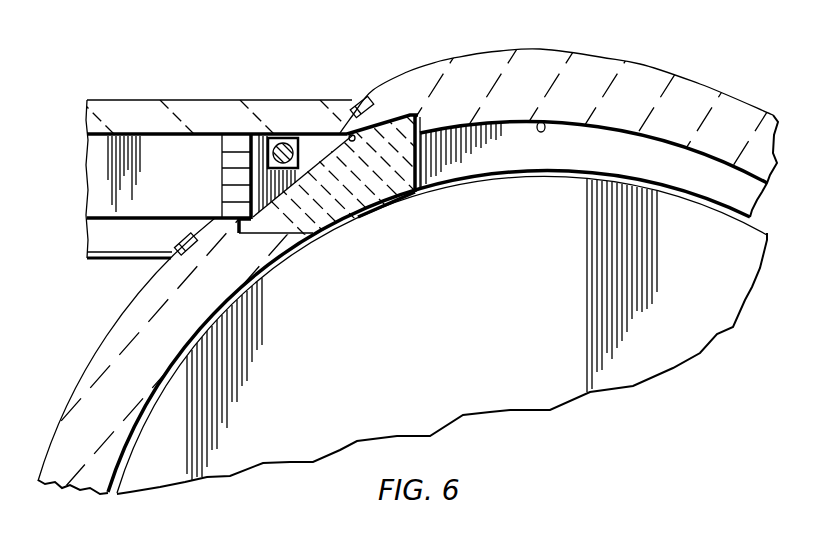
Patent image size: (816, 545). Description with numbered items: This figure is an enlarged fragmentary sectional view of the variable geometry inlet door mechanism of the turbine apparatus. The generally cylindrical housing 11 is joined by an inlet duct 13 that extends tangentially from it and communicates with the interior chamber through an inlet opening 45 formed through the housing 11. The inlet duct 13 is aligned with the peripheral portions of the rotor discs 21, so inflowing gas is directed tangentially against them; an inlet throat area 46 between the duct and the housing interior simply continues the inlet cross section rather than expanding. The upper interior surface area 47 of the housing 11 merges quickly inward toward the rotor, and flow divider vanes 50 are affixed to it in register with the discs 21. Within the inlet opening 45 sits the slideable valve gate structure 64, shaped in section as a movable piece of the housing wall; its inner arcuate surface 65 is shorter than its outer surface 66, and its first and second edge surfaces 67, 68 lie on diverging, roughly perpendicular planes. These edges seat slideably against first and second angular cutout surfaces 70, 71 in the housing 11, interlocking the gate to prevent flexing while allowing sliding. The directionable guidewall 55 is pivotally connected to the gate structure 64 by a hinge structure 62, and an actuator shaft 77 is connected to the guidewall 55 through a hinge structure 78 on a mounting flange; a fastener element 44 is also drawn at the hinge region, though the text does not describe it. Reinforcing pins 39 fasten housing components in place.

The housing 11 is at (692, 80).
The inlet duct 13 is at (128, 94).
The discs 21 is at (477, 298).
The reinforcing pins 39 is at (360, 100).
The pin 44 is at (296, 136).
The inlet opening 45 is at (350, 135).
The inlet throat area 46 is at (422, 195).
The upper interior surface area 47 is at (541, 122).
The flow divider vanes 50 is at (543, 161).
The directionable guidewall 55 is at (90, 157).
The hinge structure 62 is at (218, 153).
The slideable valve gate structure 64 is at (364, 224).
The inner arcuate surface 65 is at (394, 209).
The outer surface 66 is at (334, 153).
The first edge surface 67 is at (268, 237).
The second edge surface 68 is at (420, 160).
The first angular cutout surface 70 is at (313, 236).
The second angular cutout surface 71 is at (408, 114).
The actuator shaft 77 is at (271, 136).
The hinge structure 78 is at (260, 136).